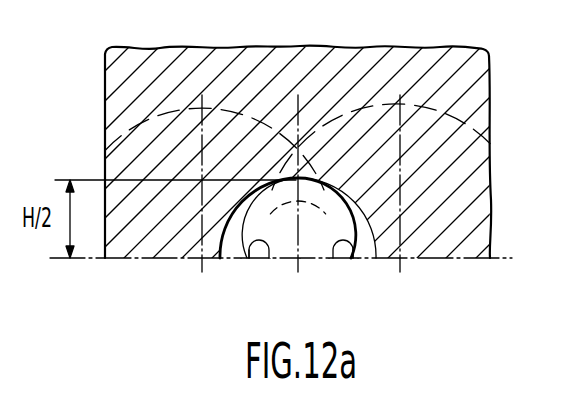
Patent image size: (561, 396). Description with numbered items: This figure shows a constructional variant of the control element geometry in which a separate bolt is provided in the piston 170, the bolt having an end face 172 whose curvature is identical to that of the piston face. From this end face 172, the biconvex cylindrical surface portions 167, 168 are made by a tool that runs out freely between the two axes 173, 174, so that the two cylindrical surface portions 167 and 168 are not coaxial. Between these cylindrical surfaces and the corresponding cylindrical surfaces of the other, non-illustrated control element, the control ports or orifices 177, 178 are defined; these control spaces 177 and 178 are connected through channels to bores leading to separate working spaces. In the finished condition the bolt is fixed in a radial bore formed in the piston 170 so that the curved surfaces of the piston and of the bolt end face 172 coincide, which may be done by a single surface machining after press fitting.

The piston 170 is at (274, 62).
The bolt end face 172 is at (316, 240).
The cylindrical surface portion 167 is at (269, 258).
The cylindrical surface portion 168 is at (333, 258).
The control port 177 is at (249, 258).
The control port 178 is at (353, 258).
The axis 173 is at (202, 262).
The axis 174 is at (400, 262).